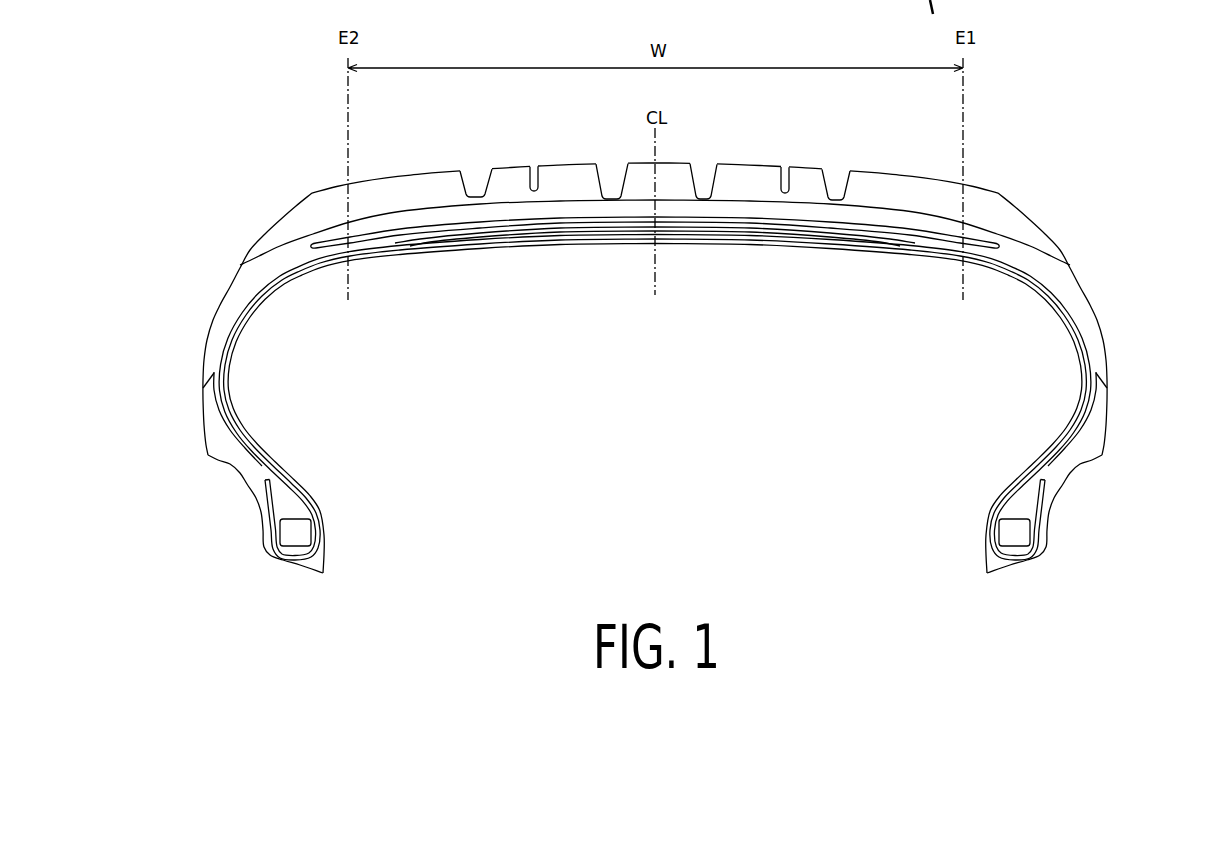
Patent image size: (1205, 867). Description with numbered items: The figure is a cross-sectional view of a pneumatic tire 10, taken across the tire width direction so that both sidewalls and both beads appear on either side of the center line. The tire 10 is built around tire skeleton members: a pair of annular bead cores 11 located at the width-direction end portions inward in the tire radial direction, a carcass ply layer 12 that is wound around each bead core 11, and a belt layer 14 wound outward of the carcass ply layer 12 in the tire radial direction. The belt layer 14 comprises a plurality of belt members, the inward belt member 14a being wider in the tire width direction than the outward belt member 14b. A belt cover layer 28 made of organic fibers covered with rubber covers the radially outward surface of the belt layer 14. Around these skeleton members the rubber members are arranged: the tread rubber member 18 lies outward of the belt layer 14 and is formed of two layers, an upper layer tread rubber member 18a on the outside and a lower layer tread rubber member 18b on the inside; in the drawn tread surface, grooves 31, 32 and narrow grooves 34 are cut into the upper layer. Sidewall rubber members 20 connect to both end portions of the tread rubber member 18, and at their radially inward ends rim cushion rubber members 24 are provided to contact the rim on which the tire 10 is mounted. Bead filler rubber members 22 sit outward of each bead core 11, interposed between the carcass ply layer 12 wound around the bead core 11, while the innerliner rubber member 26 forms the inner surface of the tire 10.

The pneumatic tire 10 is at (657, 330).
The bead core 11 is at (297, 527).
The carcass ply layer 12 is at (1057, 313).
The belt layer 14 is at (913, 133).
The inward belt member 14a is at (875, 238).
The outward belt member 14b is at (905, 233).
The tread rubber member 18 is at (1098, 200).
The upper layer tread rubber member 18a is at (990, 207).
The lower layer tread rubber member 18b is at (996, 243).
The sidewall rubber member 20 is at (220, 317).
The bead filler rubber member 22 is at (282, 495).
The rim cushion rubber member 24 is at (223, 438).
The innerliner rubber member 26 is at (612, 238).
The belt cover layer 28 is at (333, 228).
The center main groove 31 is at (621, 172).
The shoulder main groove 32 is at (483, 178).
The narrow groove 34 is at (535, 165).